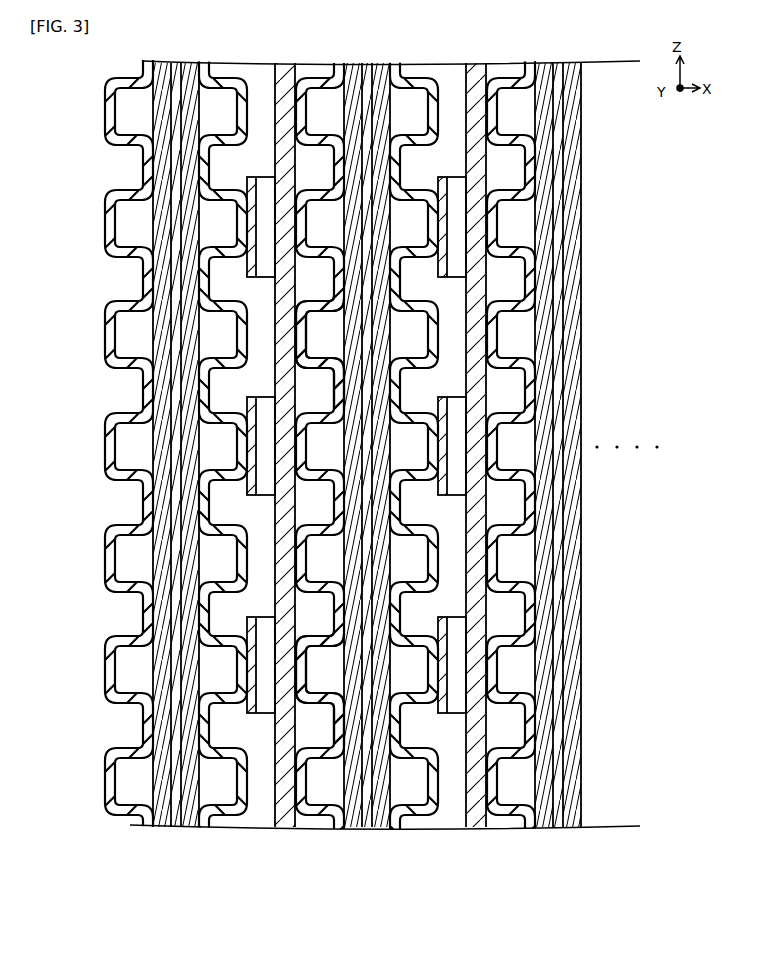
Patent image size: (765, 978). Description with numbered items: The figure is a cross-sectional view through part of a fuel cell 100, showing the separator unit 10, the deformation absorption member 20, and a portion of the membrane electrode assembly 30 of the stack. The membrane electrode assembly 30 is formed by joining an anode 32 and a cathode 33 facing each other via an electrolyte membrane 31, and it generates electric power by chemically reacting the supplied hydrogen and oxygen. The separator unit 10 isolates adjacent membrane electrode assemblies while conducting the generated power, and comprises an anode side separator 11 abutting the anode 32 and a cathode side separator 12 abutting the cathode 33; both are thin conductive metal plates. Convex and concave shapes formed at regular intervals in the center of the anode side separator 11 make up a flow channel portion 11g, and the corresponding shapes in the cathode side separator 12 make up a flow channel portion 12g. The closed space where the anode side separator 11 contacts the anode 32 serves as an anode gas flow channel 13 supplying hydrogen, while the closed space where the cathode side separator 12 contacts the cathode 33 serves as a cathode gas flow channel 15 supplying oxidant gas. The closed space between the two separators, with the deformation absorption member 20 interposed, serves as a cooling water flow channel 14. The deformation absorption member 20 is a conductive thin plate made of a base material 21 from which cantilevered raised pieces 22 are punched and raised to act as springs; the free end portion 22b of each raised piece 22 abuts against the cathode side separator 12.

The fuel cell 100 is at (410, 946).
The separator unit 10 is at (205, 502).
The anode side separator 11 is at (316, 827).
The cathode side separator 12 is at (231, 827).
The flow channel portion 11g is at (333, 690).
The flow channel portion 12g is at (170, 530).
The anode gas flow channel 13 is at (327, 337).
The cooling water flow channel 14 is at (242, 277).
The cathode gas flow channel 15 is at (407, 225).
The deformation absorption member 20 is at (378, 503).
The base material 21 is at (347, 828).
The raised piece 22 is at (362, 830).
The free end portion 22b is at (248, 700).
The membrane electrode assembly 30 is at (168, 503).
The electrolyte membrane 31 is at (178, 827).
The anode 32 is at (166, 827).
The cathode 33 is at (190, 827).